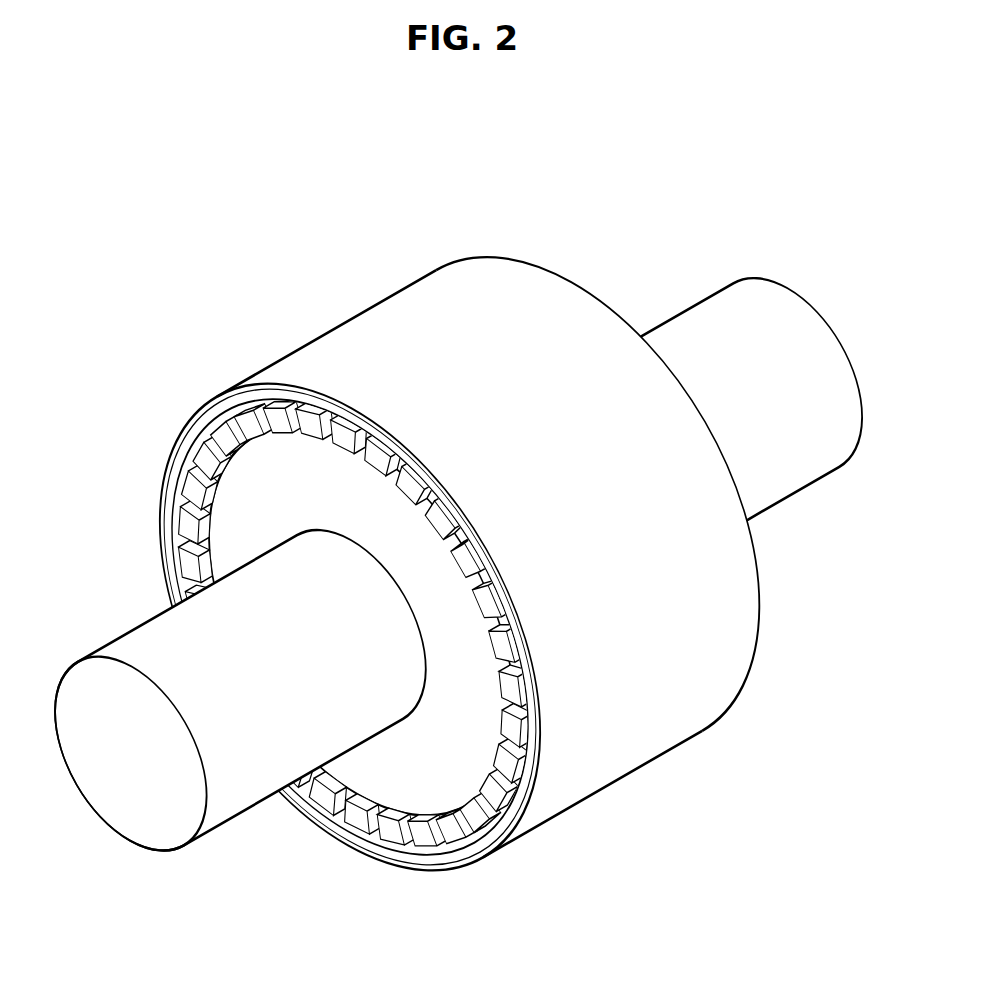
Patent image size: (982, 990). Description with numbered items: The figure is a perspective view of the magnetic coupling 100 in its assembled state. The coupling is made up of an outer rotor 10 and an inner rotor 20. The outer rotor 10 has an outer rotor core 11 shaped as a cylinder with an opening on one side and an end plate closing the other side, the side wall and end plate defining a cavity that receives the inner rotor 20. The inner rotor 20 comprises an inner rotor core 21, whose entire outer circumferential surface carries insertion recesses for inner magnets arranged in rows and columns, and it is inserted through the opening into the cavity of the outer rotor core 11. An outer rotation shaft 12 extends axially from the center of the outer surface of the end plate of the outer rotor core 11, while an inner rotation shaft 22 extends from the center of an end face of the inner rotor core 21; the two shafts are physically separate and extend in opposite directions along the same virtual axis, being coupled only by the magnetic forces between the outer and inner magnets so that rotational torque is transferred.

The magnetic coupling 100 is at (340, 268).
The outer rotor 10 is at (487, 564).
The outer rotor core 11 is at (630, 752).
The outer rotation shaft 12 is at (713, 317).
The inner rotor 20 is at (314, 650).
The inner rotor core 21 is at (417, 777).
The inner rotation shaft 22 is at (150, 645).